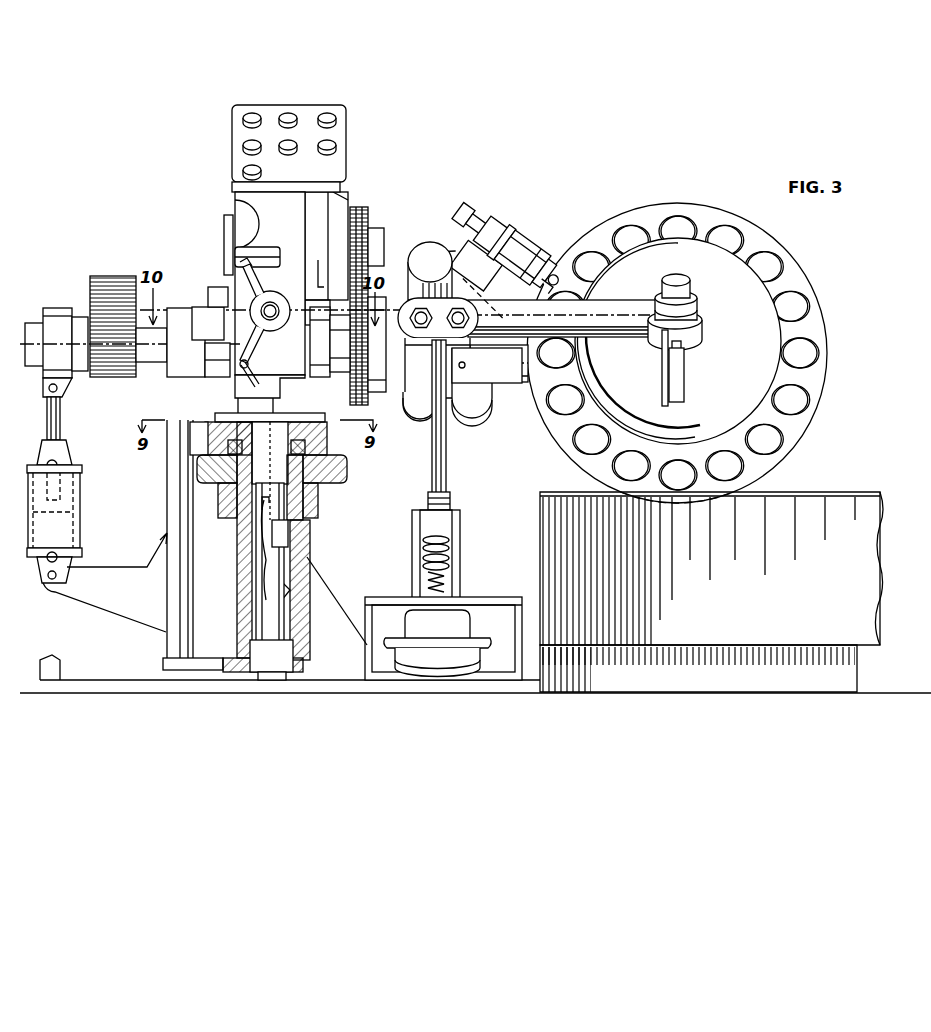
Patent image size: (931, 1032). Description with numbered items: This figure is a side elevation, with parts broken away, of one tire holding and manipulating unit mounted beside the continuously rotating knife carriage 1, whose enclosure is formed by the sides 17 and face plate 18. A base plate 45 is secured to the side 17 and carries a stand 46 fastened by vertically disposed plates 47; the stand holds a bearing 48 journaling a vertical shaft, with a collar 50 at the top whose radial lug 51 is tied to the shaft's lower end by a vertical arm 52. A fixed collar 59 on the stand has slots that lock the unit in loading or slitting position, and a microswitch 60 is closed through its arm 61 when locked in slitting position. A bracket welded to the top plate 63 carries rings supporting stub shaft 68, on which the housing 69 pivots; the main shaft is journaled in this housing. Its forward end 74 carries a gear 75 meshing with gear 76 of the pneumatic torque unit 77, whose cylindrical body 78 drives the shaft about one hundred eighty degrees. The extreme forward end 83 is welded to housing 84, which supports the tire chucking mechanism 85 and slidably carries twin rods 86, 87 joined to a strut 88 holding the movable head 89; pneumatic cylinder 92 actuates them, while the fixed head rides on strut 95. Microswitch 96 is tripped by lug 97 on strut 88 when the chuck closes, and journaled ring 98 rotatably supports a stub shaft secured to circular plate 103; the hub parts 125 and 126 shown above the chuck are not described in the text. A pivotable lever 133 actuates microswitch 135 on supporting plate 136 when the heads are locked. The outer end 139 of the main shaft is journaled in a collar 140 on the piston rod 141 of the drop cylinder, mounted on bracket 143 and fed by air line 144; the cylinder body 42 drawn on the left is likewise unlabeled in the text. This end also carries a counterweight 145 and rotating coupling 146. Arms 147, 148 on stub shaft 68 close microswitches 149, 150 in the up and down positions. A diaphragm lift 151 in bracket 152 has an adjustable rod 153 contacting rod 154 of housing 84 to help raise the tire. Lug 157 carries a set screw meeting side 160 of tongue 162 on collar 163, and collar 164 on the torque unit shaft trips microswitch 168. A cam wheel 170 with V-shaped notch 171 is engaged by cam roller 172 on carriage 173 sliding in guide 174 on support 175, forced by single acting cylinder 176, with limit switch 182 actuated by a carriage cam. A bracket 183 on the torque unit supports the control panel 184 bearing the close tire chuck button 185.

The knife carriage 1 is at (893, 490).
The sides 17 is at (876, 614).
The face plate 18 is at (820, 494).
The hydraulic cylinder 42 is at (30, 492).
The base plate 45 is at (148, 695).
The stand 46 is at (238, 596).
The vertically disposed plates 47 is at (322, 580).
The bearing 48 is at (320, 492).
The collar 50 is at (228, 420).
The radial lug 51 is at (200, 421).
The vertical arm 52 is at (173, 513).
The fixed collar 59 is at (198, 467).
The microswitch 60 is at (288, 545).
The arm 61 is at (282, 507).
The top plate 63 is at (302, 414).
The stub shaft 68 is at (274, 320).
The housing 69 is at (316, 372).
The forward end of the main shaft 74 is at (345, 382).
The gear 75 is at (372, 404).
The gear 76 is at (366, 218).
The pneumatic torque unit 77 is at (343, 190).
The cylindrical body 78 is at (330, 208).
The extreme forward end of the main shaft 83 is at (412, 374).
The housing 84 is at (414, 384).
The tire chucking mechanism 85 is at (681, 346).
The rod 86 is at (456, 416).
The rod 87 is at (415, 418).
The strut 88 is at (622, 310).
The movable head 89 is at (767, 330).
The pneumatic cylinder 92 is at (436, 258).
The strut 95 is at (508, 368).
The microswitch 96 is at (466, 398).
The lug 97 is at (466, 350).
The journaled ring 98 is at (700, 337).
The circular plate 103 is at (752, 366).
The hub collar 125 is at (690, 319).
The hub pin 126 is at (683, 287).
The pivotable lever 133 is at (682, 350).
The microswitch 135 is at (686, 383).
The supporting plate 136 is at (662, 392).
The outer end of the main shaft 139 is at (153, 367).
The collar 140 is at (60, 311).
The piston rod 141 is at (50, 420).
The bracket 143 is at (93, 603).
The line 144 is at (66, 553).
The counterweight 145 is at (119, 288).
The rotating coupling 146 is at (34, 326).
The arm 147 is at (255, 271).
The arm 148 is at (252, 349).
The microswitch 149 is at (280, 240).
The microswitch 150 is at (262, 380).
The diaphragm lift 151 is at (452, 620).
The bracket 152 is at (548, 570).
The adjustable rod 153 is at (446, 494).
The rod 154 is at (440, 456).
The lug 157 is at (214, 288).
The side of tongue 160 is at (197, 311).
The tongue 162 is at (204, 329).
The collar 163 is at (204, 377).
The collar 164 is at (226, 258).
The microswitch 168 is at (245, 219).
The cam wheel 170 is at (681, 214).
The V-shaped notch 171 is at (580, 254).
The cam roller 172 is at (569, 276).
The carriage 173 is at (553, 252).
The guide 174 is at (532, 239).
The support 175 is at (510, 223).
The single acting cylinder 176 is at (486, 206).
The limit switch 182 is at (479, 270).
The bracket 183 is at (256, 205).
The control panel 184 is at (312, 112).
The close tire chuck button 185 is at (252, 114).